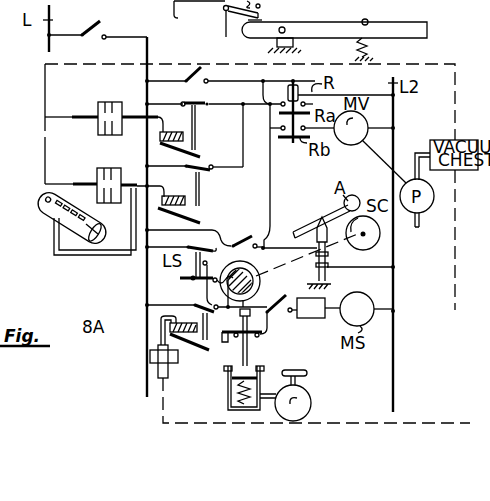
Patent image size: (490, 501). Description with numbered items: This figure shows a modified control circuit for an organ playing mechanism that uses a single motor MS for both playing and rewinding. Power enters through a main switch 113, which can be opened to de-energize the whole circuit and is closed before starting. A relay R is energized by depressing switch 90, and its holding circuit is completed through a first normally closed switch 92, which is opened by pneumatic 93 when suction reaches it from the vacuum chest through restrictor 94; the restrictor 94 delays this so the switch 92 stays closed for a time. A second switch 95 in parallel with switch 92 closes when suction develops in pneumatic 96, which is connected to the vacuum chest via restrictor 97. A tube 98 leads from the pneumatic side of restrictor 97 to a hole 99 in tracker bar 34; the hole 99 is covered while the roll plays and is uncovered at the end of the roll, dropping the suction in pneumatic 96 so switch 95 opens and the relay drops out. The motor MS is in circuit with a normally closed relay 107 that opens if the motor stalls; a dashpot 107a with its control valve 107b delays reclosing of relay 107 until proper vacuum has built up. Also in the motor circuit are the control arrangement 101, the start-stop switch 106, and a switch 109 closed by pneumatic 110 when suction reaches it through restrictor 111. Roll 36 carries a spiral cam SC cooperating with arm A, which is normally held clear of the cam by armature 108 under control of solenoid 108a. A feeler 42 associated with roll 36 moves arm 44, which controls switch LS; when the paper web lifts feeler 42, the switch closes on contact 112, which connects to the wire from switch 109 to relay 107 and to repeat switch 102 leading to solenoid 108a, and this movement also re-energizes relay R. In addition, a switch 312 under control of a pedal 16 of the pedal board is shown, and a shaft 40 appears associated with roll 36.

The main switch 113 is at (96, 25).
The switch 312 is at (224, 9).
The pedal 16 is at (414, 25).
The restrictor 94 is at (108, 107).
The pneumatic 93 is at (158, 139).
The restrictor 97 is at (108, 174).
The hole 99 is at (41, 206).
The tracker bar 34 is at (90, 233).
The tube 98 is at (112, 253).
The switch 90 is at (190, 83).
The first normally closed switch 92 is at (206, 107).
The second switch 95 is at (204, 176).
The pneumatic 96 is at (199, 212).
The contact 112 is at (236, 220).
The repeat switch 102 is at (230, 244).
The feeler 42 is at (216, 281).
The arm 44 is at (190, 279).
The switch 109 is at (196, 304).
The restrictor 111 is at (150, 356).
The pneumatic 110 is at (184, 352).
The dashpot 107a is at (228, 372).
The start-stop switch 106 is at (283, 316).
The relay 107 is at (258, 337).
The control valve 107b is at (311, 400).
The control arrangement 101 is at (318, 320).
The armature 108 is at (321, 221).
The solenoid 108a is at (330, 272).
The shaft 40 is at (308, 254).
The roll 36 is at (261, 282).